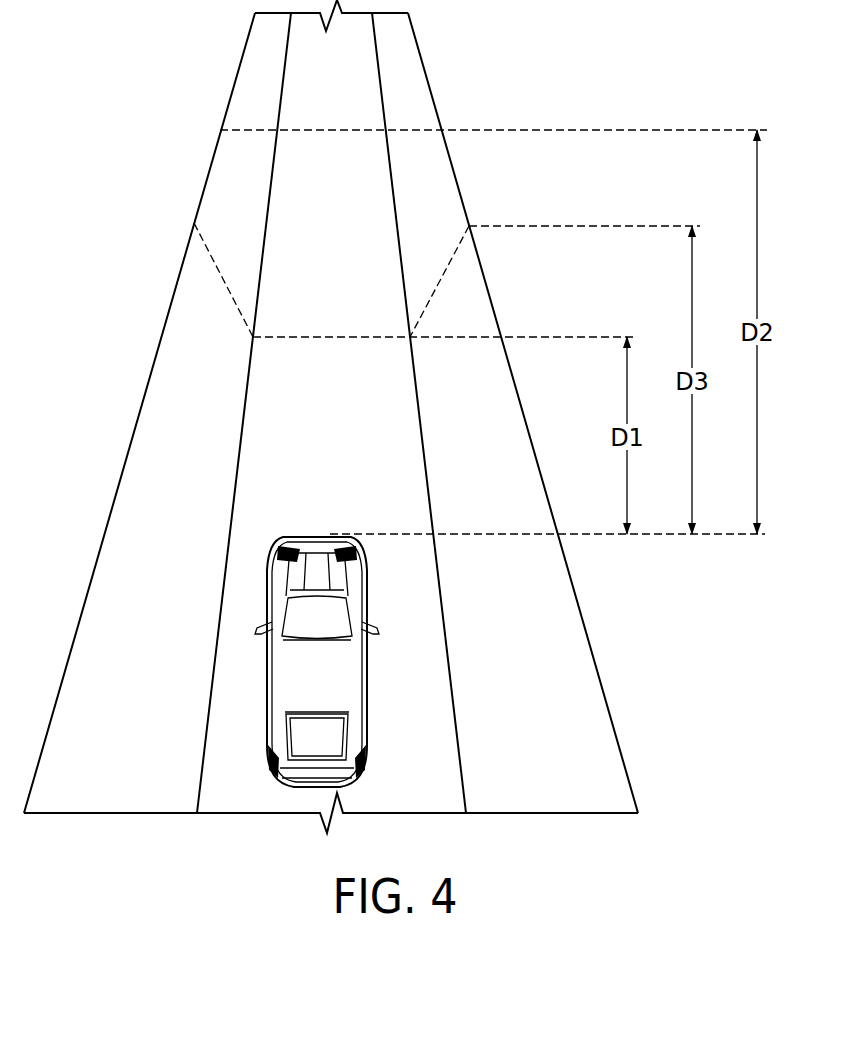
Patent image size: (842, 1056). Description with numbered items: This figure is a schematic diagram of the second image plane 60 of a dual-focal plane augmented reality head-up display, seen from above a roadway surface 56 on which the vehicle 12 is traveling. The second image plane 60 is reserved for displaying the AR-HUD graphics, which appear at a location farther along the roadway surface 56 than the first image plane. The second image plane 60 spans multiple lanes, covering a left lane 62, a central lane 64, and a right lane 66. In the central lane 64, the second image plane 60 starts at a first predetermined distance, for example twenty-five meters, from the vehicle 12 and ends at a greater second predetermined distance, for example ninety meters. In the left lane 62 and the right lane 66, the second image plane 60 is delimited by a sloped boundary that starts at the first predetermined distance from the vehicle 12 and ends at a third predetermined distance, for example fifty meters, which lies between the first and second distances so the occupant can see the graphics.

The vehicle 12 is at (304, 688).
The roadway surface 56 is at (297, 430).
The second image plane 60 is at (248, 130).
The left lane 62 is at (162, 485).
The central lane 64 is at (388, 493).
The right lane 66 is at (492, 422).